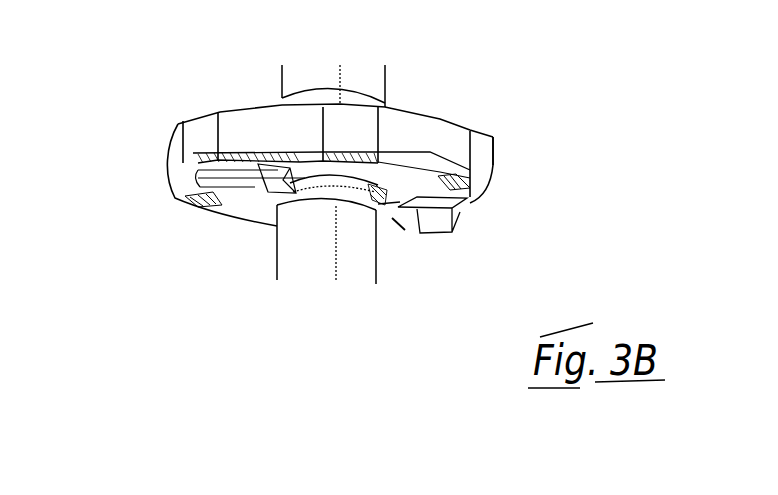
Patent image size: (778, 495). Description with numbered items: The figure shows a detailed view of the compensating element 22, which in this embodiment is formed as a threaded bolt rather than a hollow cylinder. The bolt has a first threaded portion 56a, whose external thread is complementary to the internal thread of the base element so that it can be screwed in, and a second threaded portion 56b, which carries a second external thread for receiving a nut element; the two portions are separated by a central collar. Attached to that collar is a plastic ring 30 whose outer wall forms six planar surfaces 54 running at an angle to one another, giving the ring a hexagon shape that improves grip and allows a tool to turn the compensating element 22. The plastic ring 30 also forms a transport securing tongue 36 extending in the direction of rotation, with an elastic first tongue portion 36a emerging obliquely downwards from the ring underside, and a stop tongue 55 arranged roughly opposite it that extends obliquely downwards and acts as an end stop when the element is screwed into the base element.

The compensating element 22 is at (146, 240).
The plastic ring 30 is at (495, 166).
The transport securing tongue 36 is at (440, 215).
The first tongue portion 36a is at (403, 222).
The planar surfaces 54 is at (257, 133).
The stop tongue 55 is at (257, 163).
The first threaded portion 56a is at (275, 270).
The second threaded portion 56b is at (386, 75).